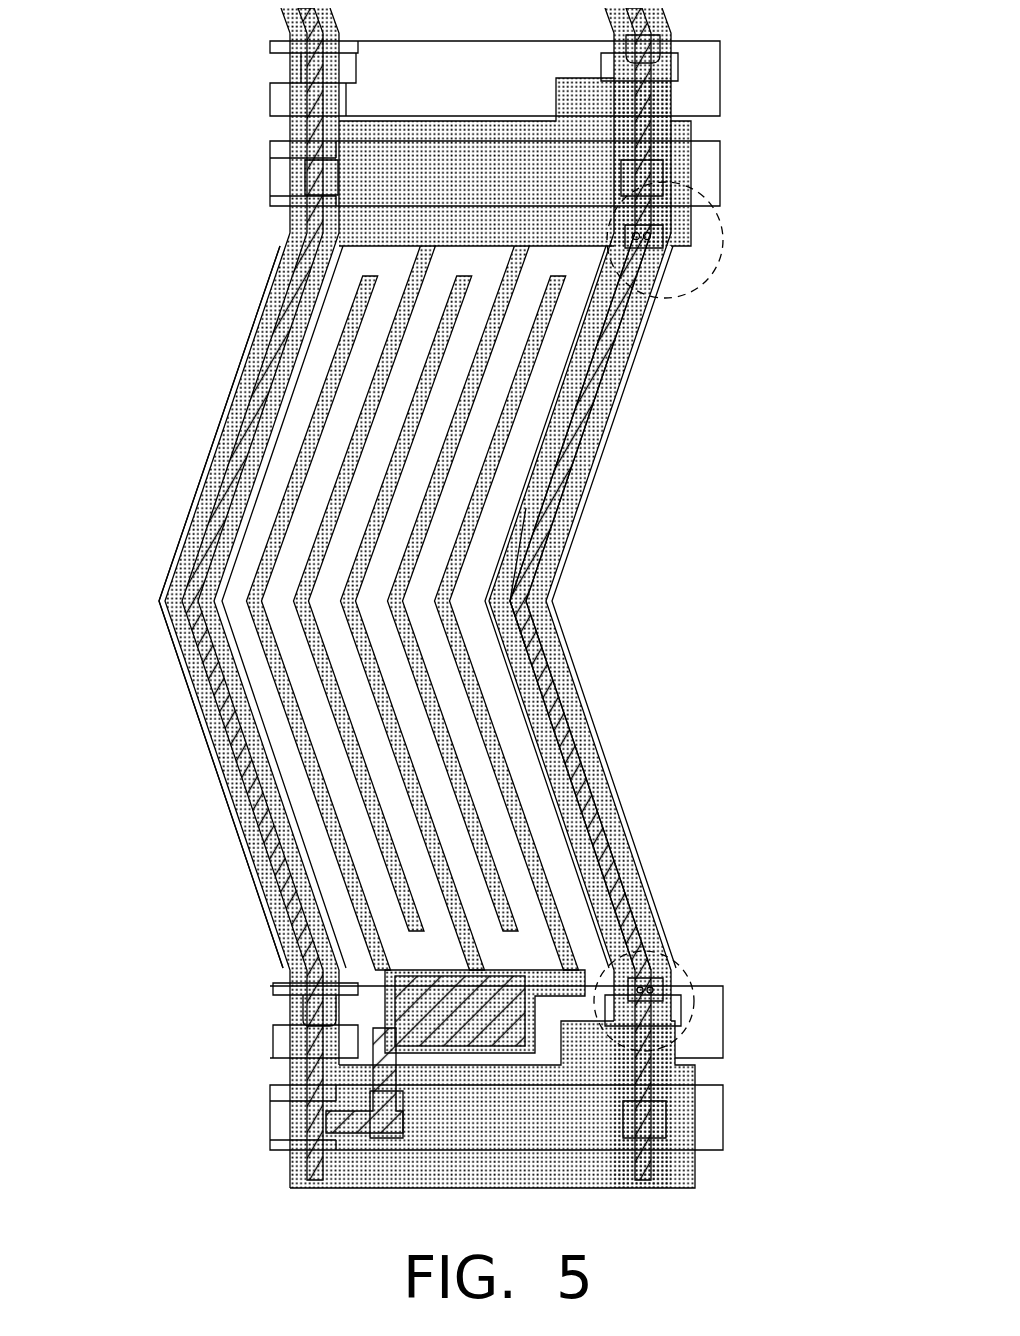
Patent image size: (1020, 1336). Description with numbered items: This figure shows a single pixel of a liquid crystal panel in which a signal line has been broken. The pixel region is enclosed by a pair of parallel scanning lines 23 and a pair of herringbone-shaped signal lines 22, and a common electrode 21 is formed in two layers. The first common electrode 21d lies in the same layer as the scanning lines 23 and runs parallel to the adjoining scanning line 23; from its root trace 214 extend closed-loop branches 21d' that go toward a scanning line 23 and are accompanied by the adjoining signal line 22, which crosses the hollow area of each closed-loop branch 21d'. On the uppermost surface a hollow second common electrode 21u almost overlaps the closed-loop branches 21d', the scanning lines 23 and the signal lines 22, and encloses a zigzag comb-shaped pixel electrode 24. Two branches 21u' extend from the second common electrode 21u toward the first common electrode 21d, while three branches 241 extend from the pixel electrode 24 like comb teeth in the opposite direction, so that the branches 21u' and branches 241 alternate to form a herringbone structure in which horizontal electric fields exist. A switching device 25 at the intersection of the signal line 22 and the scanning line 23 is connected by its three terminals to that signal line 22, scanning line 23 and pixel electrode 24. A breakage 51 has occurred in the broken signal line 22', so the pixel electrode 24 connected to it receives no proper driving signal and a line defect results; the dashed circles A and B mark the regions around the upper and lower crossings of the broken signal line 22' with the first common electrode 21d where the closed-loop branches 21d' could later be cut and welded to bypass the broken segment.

The common electrode 21 is at (190, 710).
The second common electrode 21u is at (478, 633).
The branches of the second common electrode 21u' is at (473, 604).
The first common electrode 21d is at (548, 546).
The closed-loop branches 21d' is at (497, 598).
The signal line 22 is at (447, 594).
The broken signal line 22' is at (663, 601).
The scanning line 23 is at (712, 152).
The pixel electrode 24 is at (555, 960).
The branches of the pixel electrode 241 is at (340, 352).
The root trace 214 is at (677, 983).
The switching device 25 is at (415, 1118).
The breakage 51 is at (535, 557).
The detail region A is at (730, 252).
The detail region B is at (692, 955).